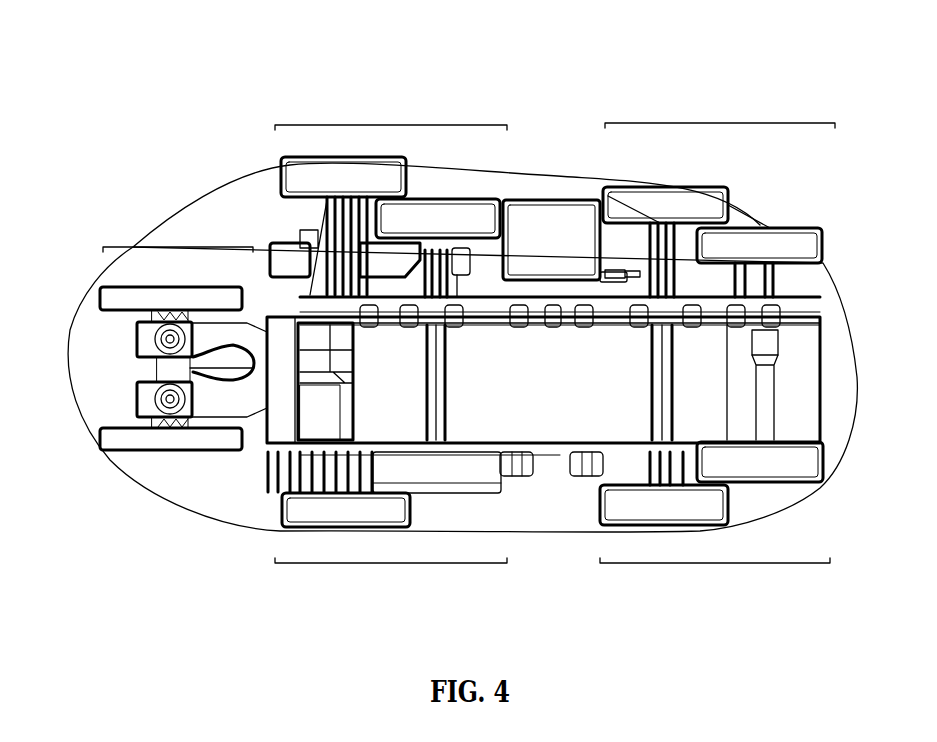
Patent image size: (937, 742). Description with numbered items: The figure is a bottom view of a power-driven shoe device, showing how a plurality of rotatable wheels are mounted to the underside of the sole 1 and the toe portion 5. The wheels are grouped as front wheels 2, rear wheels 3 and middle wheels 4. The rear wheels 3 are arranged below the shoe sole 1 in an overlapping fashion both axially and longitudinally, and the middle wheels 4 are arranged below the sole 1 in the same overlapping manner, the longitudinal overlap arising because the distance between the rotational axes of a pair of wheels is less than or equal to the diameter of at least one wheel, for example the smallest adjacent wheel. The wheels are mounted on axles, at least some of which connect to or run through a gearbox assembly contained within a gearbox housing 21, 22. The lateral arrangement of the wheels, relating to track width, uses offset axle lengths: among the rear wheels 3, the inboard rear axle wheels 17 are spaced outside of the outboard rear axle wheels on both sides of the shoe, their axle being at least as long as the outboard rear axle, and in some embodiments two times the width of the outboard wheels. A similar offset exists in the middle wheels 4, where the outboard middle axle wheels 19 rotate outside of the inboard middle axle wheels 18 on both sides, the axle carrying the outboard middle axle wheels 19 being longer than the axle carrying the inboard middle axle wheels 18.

The sole 1 is at (860, 390).
The front wheels 2 is at (177, 245).
The rear wheels 3 is at (688, 122).
The middle wheels 4 is at (383, 124).
The toe portion 5 is at (68, 405).
The inboard rear axle wheels 17 is at (660, 183).
The inboard middle axle wheels 18 is at (450, 200).
The outboard middle axle wheels 19 is at (305, 157).
The gearbox housing 21 is at (290, 232).
The gearbox housing 22 is at (257, 453).